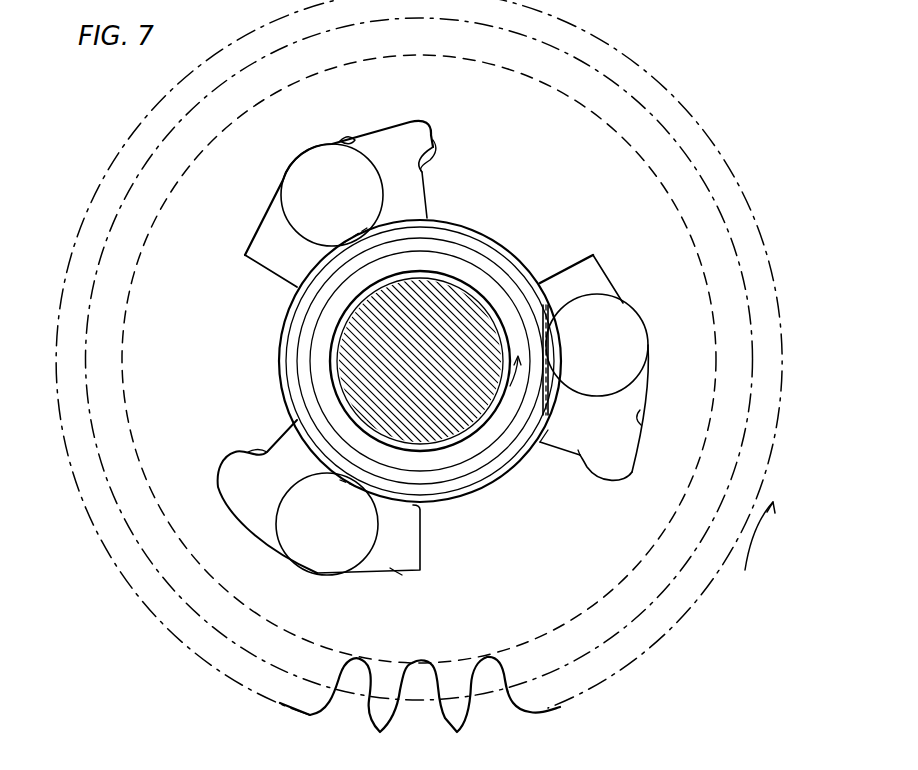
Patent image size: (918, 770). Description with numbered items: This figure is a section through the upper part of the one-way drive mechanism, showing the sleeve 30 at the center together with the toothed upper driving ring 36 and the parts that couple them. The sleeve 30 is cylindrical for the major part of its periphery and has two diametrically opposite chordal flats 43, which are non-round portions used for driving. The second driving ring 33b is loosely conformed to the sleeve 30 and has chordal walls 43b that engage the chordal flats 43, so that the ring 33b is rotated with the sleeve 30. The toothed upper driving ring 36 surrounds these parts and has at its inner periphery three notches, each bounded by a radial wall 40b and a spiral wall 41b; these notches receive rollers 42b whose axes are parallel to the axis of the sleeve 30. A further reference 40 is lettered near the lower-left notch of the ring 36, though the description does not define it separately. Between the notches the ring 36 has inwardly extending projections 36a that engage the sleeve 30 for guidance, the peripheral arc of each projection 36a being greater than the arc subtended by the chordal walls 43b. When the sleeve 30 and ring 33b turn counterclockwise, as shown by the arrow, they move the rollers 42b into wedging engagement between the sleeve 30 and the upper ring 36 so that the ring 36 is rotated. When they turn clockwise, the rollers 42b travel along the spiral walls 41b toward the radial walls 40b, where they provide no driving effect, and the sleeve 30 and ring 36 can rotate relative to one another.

The toothed upper driving ring 36 is at (652, 69).
The inwardly extending projections 36a is at (556, 148).
The sleeve 30 is at (518, 283).
The rotor body 40 is at (255, 267).
The radial walls 40b is at (433, 140).
The spiral walls 41b is at (346, 135).
The rollers 42b is at (286, 187).
The chordal flats 43 is at (281, 359).
The chordal walls 43b is at (556, 418).
The second driving ring 33b is at (612, 467).